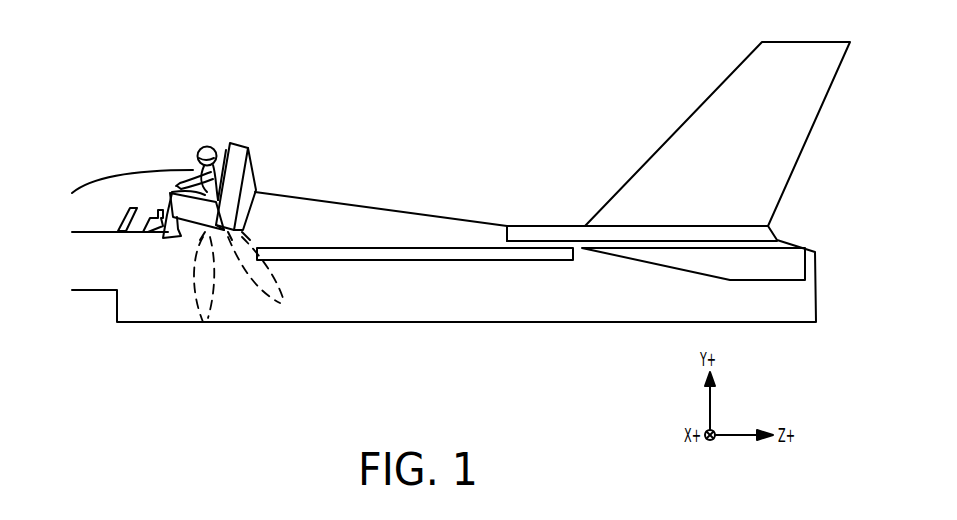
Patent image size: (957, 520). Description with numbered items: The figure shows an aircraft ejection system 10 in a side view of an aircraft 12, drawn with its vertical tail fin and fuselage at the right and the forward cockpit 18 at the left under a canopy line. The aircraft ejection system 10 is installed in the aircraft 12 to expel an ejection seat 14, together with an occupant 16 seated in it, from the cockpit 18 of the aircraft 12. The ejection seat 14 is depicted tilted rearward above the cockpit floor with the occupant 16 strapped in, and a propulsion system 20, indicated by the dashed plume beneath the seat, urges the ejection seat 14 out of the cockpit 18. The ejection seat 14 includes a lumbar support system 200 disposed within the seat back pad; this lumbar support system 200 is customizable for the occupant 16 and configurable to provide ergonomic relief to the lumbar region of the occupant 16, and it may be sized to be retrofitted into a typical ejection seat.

The aircraft ejection system 10 is at (380, 112).
The aircraft 12 is at (474, 300).
The ejection seat 14 is at (243, 164).
The occupant 16 is at (198, 150).
The cockpit 18 is at (104, 215).
The propulsion system 20 is at (203, 279).
The lumbar support system 200 is at (236, 189).